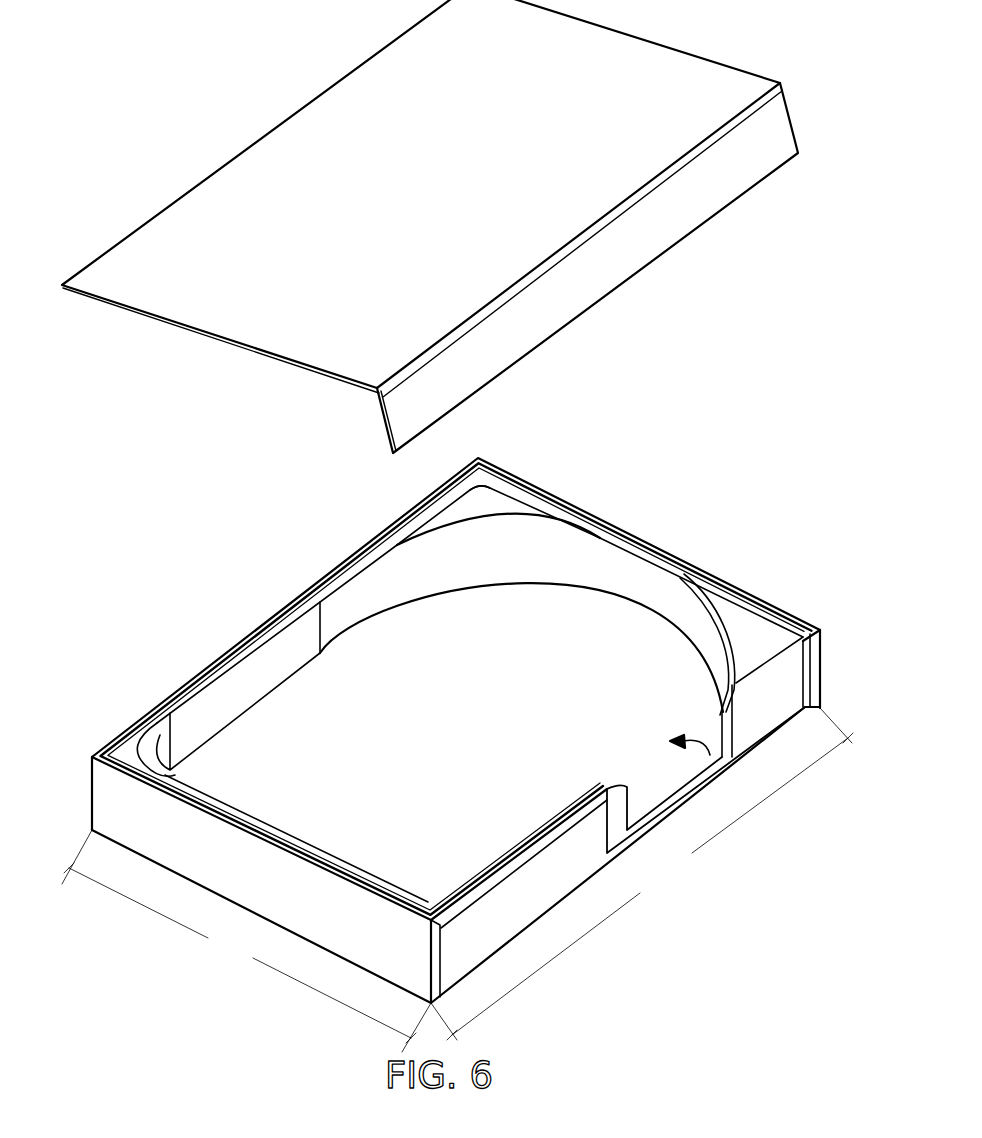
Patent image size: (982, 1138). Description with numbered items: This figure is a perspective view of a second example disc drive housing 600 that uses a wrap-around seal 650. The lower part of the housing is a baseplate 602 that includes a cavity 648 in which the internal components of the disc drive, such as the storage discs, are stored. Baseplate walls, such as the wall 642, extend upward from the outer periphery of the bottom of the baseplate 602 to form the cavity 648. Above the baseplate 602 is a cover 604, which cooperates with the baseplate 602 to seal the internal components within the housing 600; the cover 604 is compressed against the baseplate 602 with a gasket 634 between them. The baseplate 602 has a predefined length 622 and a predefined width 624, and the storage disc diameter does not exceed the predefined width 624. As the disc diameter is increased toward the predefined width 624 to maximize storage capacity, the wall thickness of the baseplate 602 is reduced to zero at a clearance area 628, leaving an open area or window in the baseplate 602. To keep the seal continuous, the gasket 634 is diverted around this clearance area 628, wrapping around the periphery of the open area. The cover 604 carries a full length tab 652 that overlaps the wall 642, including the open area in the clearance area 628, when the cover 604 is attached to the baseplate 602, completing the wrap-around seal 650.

The disc drive housing 600 is at (146, 75).
The baseplate 602 is at (474, 696).
The cover 604 is at (466, 190).
The predefined length 622 is at (680, 890).
The predefined width 624 is at (242, 960).
The clearance area 628 is at (702, 766).
The gasket 634 is at (497, 462).
The wall 642 is at (549, 900).
The cavity 648 is at (530, 607).
The wrap-around seal 650 is at (645, 769).
The full length tab 652 is at (727, 536).